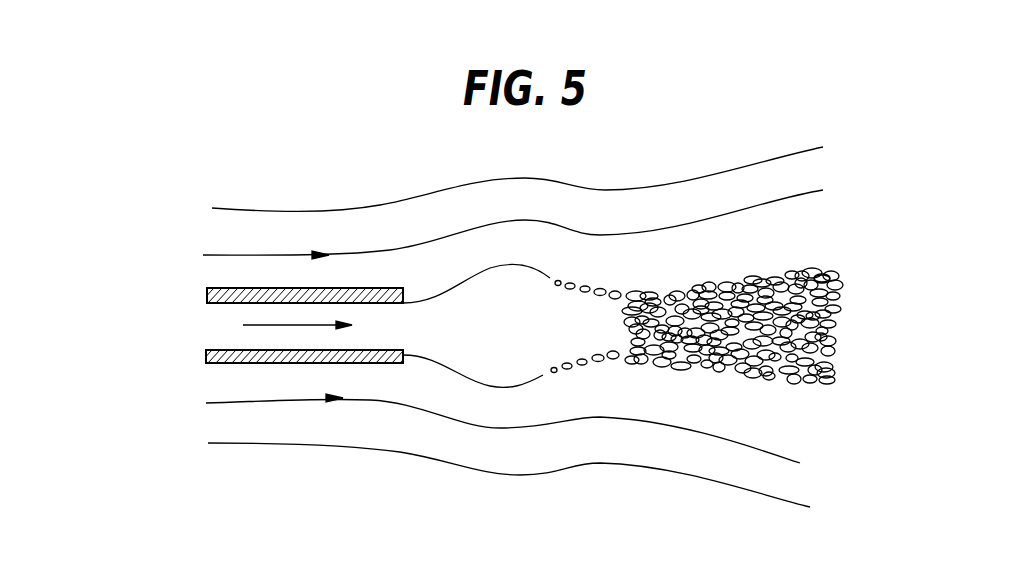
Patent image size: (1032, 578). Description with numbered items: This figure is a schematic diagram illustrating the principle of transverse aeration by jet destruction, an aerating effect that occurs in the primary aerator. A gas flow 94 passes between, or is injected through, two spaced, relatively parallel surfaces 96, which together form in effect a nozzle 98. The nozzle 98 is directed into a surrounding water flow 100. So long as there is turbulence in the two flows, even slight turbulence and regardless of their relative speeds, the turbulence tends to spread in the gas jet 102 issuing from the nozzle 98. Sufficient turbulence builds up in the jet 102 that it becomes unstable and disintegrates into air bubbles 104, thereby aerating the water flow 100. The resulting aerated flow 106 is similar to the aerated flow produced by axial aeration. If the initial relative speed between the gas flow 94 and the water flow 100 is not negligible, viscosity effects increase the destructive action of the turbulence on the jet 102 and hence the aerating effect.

The gas flow 94 is at (196, 328).
The spaced, relatively parallel surfaces 96 is at (262, 289).
The nozzle 98 is at (397, 331).
The surrounding water flow 100 is at (583, 205).
The gas jet 102 is at (517, 371).
The air bubbles 104 is at (765, 387).
The aerated flow 106 is at (819, 274).